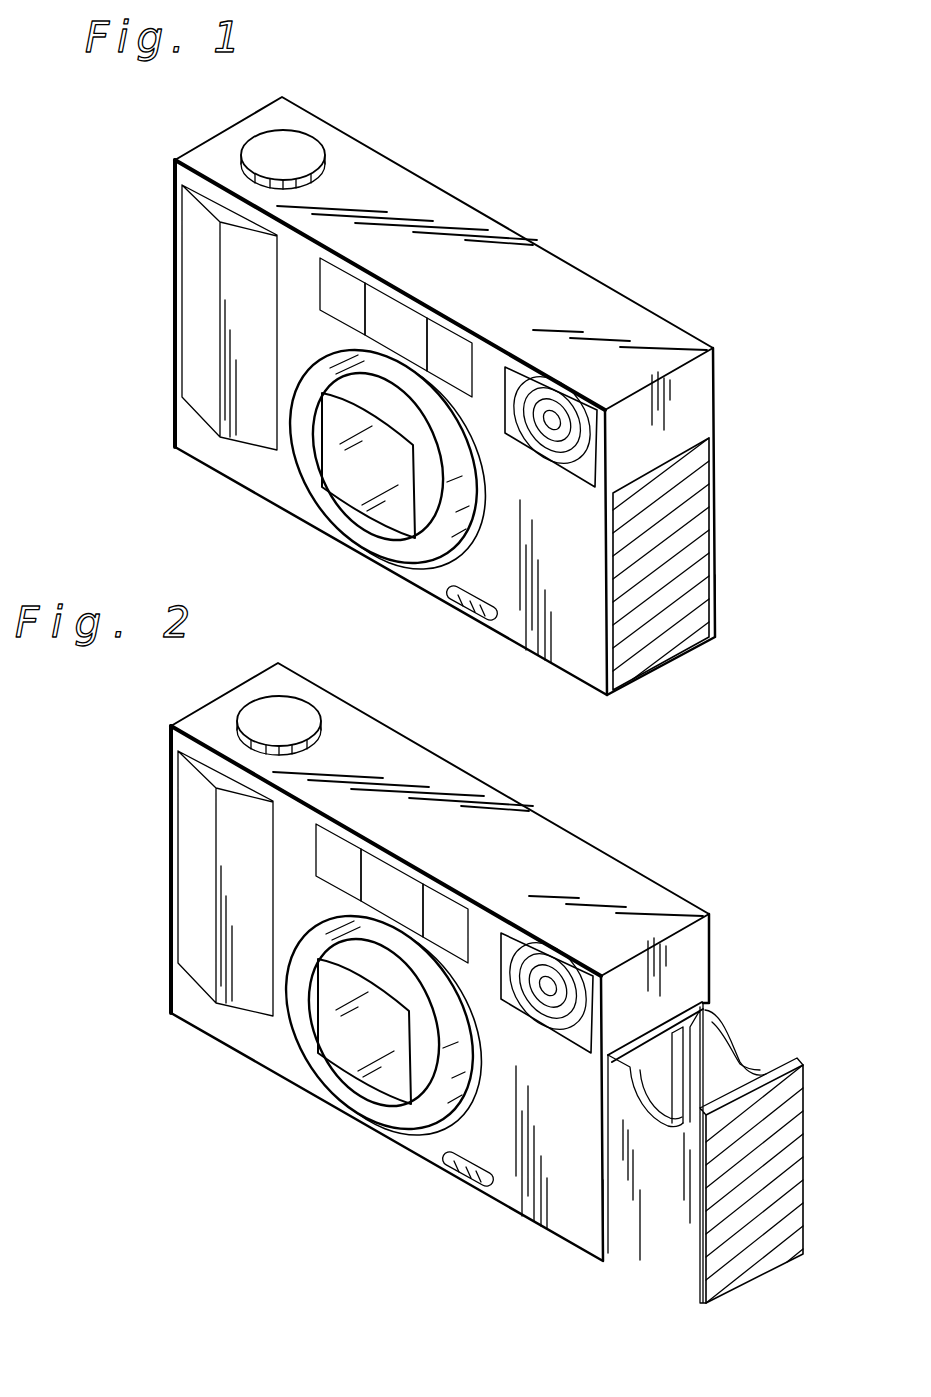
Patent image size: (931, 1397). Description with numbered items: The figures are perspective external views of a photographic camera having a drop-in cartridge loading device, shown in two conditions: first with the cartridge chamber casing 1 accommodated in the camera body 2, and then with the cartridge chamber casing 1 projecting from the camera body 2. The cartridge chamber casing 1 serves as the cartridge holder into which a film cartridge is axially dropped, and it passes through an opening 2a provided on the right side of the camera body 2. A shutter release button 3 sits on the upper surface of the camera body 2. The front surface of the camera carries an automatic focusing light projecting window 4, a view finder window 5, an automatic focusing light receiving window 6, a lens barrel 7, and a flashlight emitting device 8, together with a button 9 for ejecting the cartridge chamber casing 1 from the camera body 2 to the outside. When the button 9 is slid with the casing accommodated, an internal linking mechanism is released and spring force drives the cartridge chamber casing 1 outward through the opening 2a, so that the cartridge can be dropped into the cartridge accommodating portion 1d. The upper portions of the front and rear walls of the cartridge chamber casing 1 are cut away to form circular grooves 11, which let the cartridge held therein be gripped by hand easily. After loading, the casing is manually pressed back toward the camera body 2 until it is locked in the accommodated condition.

In FIG. 1, the cartridge chamber casing 1 is at (717, 545).
In FIG. 2, the cartridge chamber casing 1 is at (807, 1160).
In FIG. 2, the cartridge accommodating portion 1d is at (733, 1085).
In FIG. 1, the camera body 2 is at (718, 371).
In FIG. 2, the camera body 2 is at (713, 951).
In FIG. 1, the opening 2a is at (718, 598).
In FIG. 2, the opening 2a is at (600, 1178).
In FIG. 1, the shutter release button 3 is at (305, 157).
In FIG. 2, the shutter release button 3 is at (303, 722).
In FIG. 1, the automatic focusing light projecting window 4 is at (338, 287).
In FIG. 2, the automatic focusing light projecting window 4 is at (335, 860).
In FIG. 1, the view finder window 5 is at (394, 324).
In FIG. 2, the view finder window 5 is at (392, 893).
In FIG. 1, the automatic focusing light receiving window 6 is at (455, 358).
In FIG. 2, the automatic focusing light receiving window 6 is at (450, 925).
In FIG. 1, the lens barrel 7 is at (312, 480).
In FIG. 2, the lens barrel 7 is at (378, 1108).
In FIG. 1, the flashlight emitting device 8 is at (565, 418).
In FIG. 2, the flashlight emitting device 8 is at (560, 985).
In FIG. 1, the button 9 is at (470, 612).
In FIG. 2, the button 9 is at (472, 1180).
In FIG. 2, the circular grooves 11 is at (740, 1057).